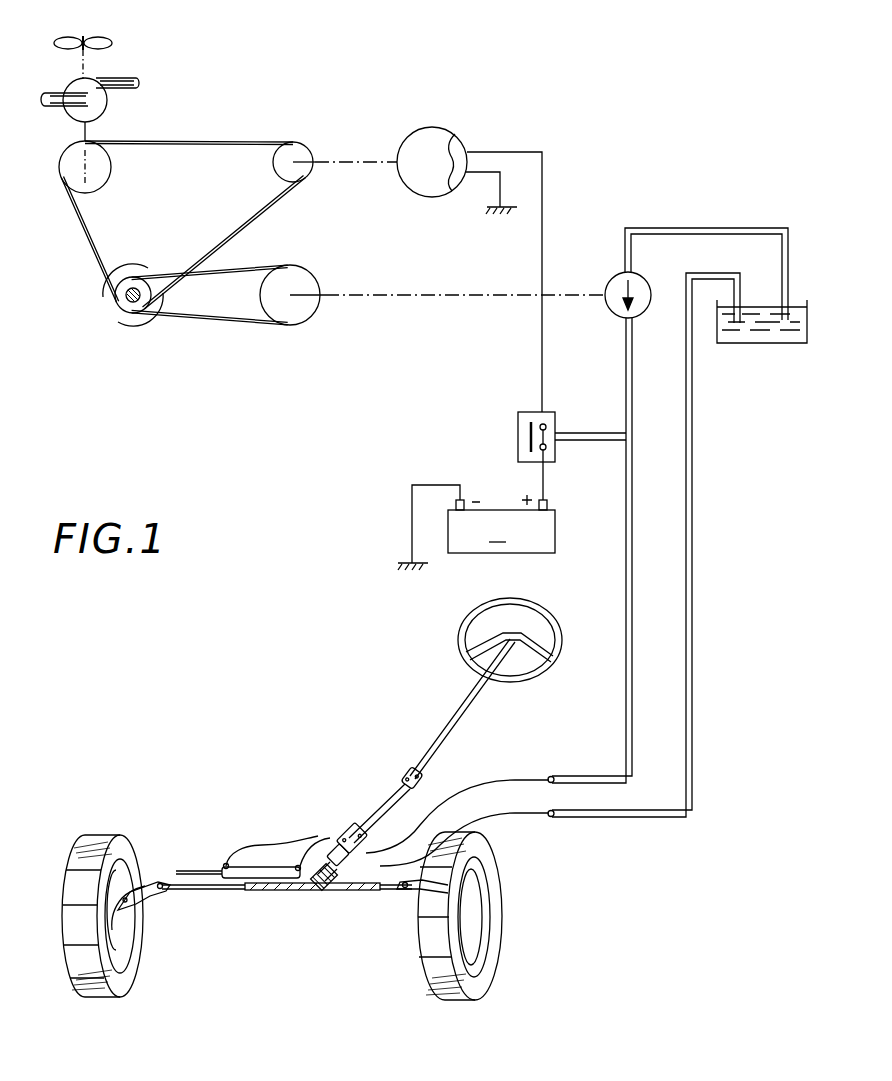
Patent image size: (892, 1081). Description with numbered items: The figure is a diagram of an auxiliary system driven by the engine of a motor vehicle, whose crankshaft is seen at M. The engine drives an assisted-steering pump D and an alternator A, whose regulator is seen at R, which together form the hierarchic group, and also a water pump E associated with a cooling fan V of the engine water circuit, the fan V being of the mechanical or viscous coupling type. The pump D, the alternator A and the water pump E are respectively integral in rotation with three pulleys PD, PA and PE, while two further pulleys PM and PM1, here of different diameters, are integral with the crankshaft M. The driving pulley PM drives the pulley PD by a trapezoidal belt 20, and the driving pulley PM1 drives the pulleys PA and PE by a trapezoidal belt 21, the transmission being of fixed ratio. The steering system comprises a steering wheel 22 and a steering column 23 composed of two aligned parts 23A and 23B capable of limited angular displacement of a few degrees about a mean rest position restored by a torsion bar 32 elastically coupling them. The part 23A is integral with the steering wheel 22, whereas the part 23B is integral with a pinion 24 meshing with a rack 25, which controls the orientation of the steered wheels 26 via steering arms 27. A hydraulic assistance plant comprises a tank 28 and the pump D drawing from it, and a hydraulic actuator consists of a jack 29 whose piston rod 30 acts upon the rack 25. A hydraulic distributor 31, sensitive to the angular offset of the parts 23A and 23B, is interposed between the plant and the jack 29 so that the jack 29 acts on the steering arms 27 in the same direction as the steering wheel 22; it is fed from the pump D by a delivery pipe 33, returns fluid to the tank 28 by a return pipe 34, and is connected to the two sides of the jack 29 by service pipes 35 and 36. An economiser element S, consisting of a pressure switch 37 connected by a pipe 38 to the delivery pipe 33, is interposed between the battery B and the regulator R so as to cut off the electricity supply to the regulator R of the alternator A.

The cooling fan V is at (97, 34).
The water pump E is at (105, 106).
The water pump pulley PE is at (109, 170).
The alternator pulley PA is at (294, 148).
The trapezoidal belt 21 is at (194, 141).
The alternator A is at (424, 140).
The regulator R is at (455, 149).
The crankshaft M is at (126, 306).
The driving pulley PM is at (112, 278).
The driving pulley PM1 is at (133, 266).
The assisted-steering pump pulley PD is at (292, 270).
The trapezoidal belt 20 is at (197, 328).
The assisted-steering pump D is at (614, 276).
The tank 28 is at (750, 345).
The economiser element S is at (504, 424).
The pressure switch 37 is at (518, 415).
The pipe 38 is at (585, 432).
The battery B is at (476, 527).
The delivery pipe 33 is at (634, 578).
The return pipe 34 is at (694, 642).
The steering wheel 22 is at (460, 622).
The steering column 23 is at (476, 692).
The steering column part 23A is at (397, 790).
The steering column part 23B is at (337, 890).
The hydraulic distributor 31 is at (350, 822).
The torsion bar 32 is at (368, 818).
The service pipe 35 is at (306, 815).
The service pipe 36 is at (320, 822).
The jack 29 is at (258, 866).
The rod 30 is at (203, 869).
The rack 25 is at (246, 889).
The pinion 24 is at (324, 887).
The steering arms 27 is at (168, 880).
The steered wheels 26 is at (88, 998).